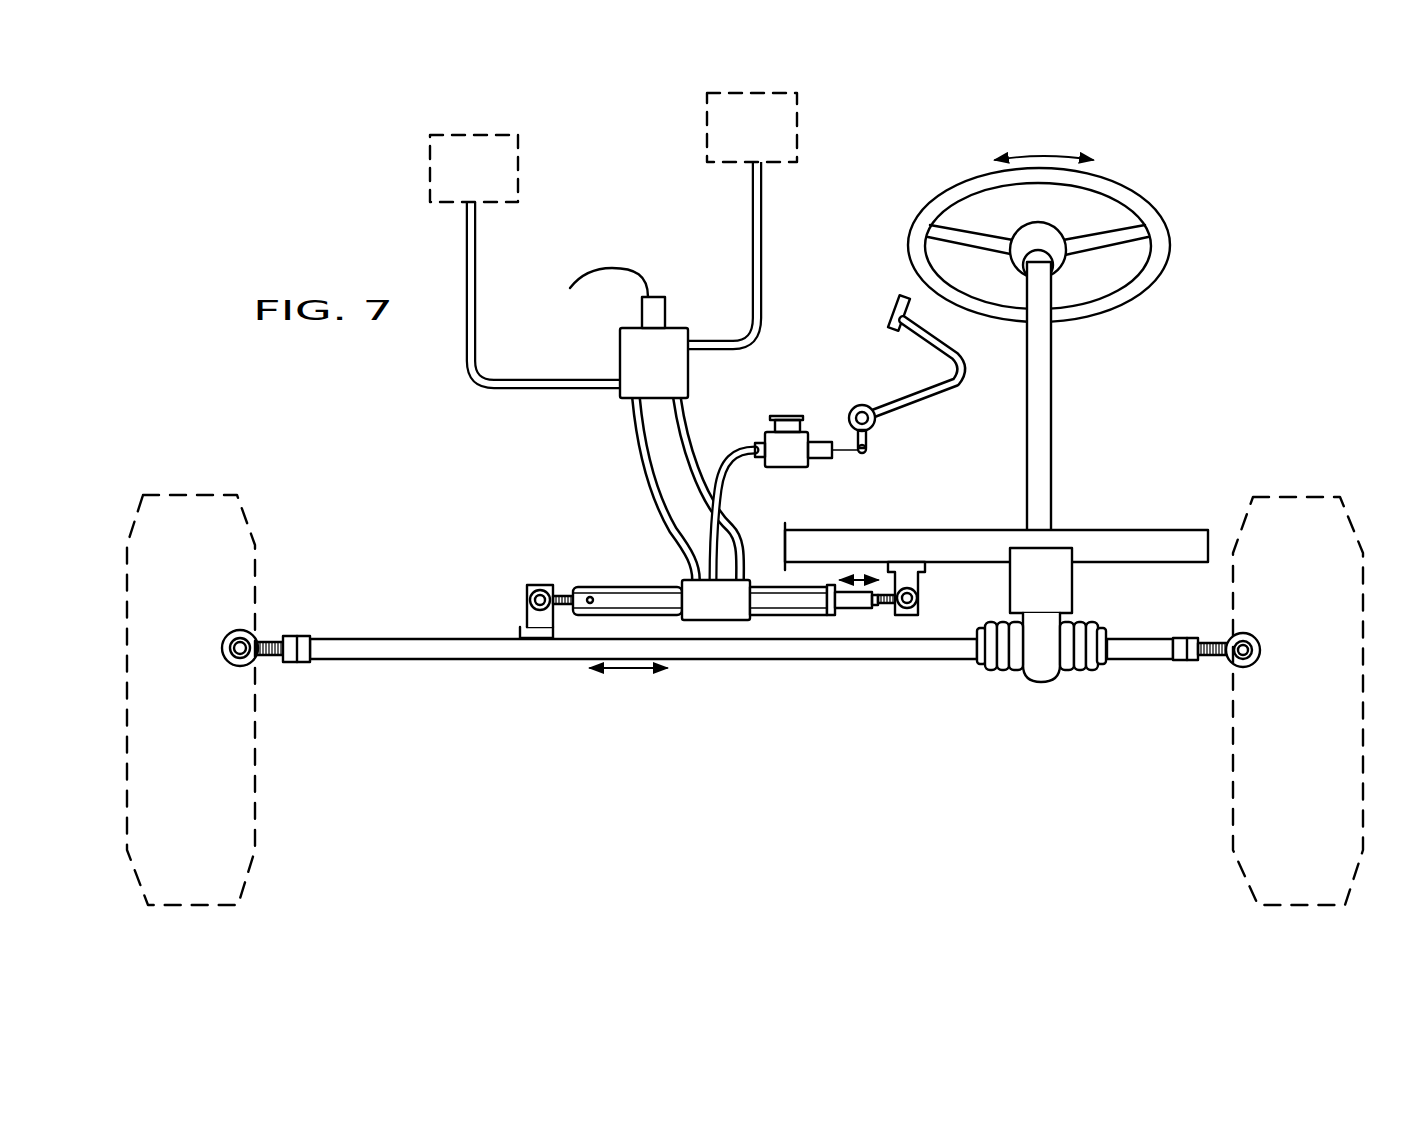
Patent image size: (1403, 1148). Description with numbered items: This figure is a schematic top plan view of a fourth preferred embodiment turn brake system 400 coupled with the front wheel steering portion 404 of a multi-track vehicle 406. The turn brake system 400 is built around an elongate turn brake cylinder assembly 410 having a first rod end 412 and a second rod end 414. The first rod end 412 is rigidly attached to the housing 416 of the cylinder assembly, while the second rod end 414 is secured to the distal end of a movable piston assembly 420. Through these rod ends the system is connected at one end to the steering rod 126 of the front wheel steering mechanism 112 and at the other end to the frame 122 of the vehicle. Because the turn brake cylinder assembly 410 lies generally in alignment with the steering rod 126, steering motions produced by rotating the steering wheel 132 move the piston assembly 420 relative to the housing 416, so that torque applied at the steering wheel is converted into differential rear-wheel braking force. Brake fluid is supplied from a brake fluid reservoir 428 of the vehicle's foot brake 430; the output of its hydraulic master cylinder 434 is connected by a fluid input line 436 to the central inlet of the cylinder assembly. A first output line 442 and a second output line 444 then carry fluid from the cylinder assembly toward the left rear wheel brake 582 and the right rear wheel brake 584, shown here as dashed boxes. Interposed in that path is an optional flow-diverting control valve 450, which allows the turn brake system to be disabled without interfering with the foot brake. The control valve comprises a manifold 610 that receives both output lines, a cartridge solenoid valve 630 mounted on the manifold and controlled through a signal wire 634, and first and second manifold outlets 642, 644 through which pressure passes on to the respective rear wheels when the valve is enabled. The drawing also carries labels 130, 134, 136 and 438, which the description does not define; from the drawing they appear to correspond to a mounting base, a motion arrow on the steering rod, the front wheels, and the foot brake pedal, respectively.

The front wheel steering mechanism 112 is at (1097, 425).
The frame 122 is at (815, 527).
The steering rod 126 is at (350, 638).
The mounting bracket base 130 is at (523, 620).
The steering wheel 132 is at (1133, 203).
The tie rod movement arrow 134 is at (612, 672).
The wheels 136 is at (172, 495).
The turn brake system 400 is at (454, 441).
The front wheel steering portion 404 is at (1207, 374).
The multi-track vehicle 406 is at (1305, 274).
The turn brake cylinder assembly 410 is at (695, 581).
The first rod end 412 is at (526, 588).
The second rod end 414 is at (920, 597).
The housing 416 is at (637, 597).
The piston assembly 420 is at (852, 610).
The brake fluid reservoir 428 is at (803, 431).
The foot brake 430 is at (869, 343).
The hydraulic master cylinder 434 is at (782, 432).
The fluid input line 436 is at (727, 482).
The pedal 438 is at (886, 306).
The first output line 442 is at (633, 435).
The second output line 444 is at (688, 437).
The flow-diverting control valve 450 is at (676, 306).
The left rear wheel brake 582 is at (518, 177).
The right rear wheel brake 584 is at (797, 135).
The manifold 610 is at (635, 360).
The cartridge solenoid valve 630 is at (642, 314).
The signal wire 634 is at (606, 268).
The first manifold outlet 642 is at (583, 378).
The second manifold outlet 644 is at (724, 340).